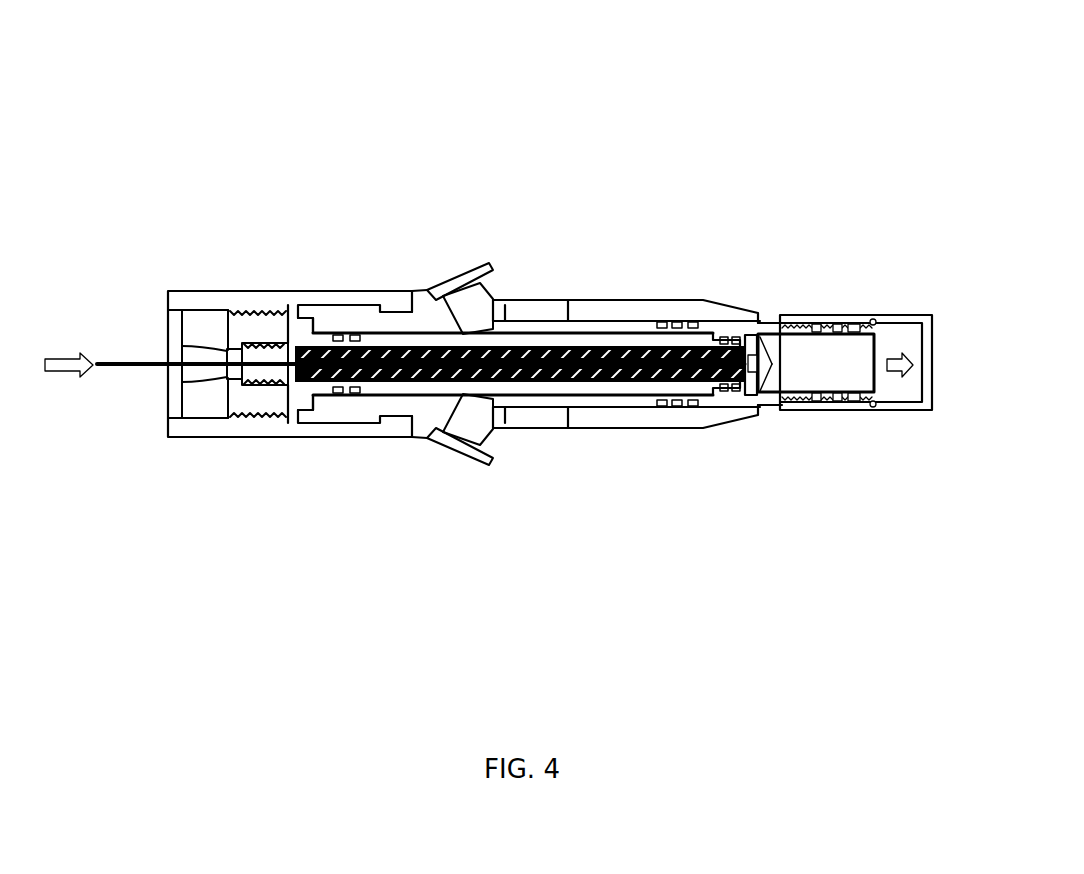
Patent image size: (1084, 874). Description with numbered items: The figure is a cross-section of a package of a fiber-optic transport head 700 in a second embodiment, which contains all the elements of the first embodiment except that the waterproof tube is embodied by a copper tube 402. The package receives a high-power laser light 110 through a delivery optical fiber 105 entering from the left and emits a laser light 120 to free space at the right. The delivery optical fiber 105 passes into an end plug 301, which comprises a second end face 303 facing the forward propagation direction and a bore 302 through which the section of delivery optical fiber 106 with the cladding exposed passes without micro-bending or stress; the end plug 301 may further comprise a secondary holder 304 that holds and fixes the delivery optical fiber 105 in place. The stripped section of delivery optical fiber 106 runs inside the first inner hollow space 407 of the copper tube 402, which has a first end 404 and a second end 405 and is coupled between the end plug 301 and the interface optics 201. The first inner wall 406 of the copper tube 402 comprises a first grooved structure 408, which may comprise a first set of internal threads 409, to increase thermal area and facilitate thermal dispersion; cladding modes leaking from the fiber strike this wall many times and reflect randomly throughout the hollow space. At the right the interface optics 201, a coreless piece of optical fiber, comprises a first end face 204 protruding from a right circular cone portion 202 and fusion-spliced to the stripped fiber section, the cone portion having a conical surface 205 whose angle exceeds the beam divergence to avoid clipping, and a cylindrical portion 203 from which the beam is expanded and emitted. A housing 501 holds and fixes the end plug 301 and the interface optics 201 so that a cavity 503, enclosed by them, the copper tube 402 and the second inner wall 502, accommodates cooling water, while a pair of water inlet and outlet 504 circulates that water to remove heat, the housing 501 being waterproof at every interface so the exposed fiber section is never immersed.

The package of the fiber-optic transport head 700 is at (560, 268).
The high-power laser light 110 is at (67, 355).
The delivery optical fiber 105 is at (150, 362).
The secondary holder 304 is at (210, 355).
The second end face 303 is at (298, 393).
The end plug 301 is at (264, 343).
The bore 302 is at (276, 357).
The first end 404 is at (313, 332).
The housing 501 is at (407, 283).
The pair of water inlet and outlet 504 is at (468, 288).
The second inner wall 502 is at (531, 323).
The cavity 503 is at (523, 397).
The copper tube 402 is at (596, 333).
The section of delivery optical fiber with the cladding exposed 106 is at (648, 346).
The first inner wall 406 is at (551, 388).
The first inner hollow space 407 is at (598, 383).
The first grooved structure 408 is at (632, 383).
The first set of internal threads 409 is at (700, 330).
The second end 405 is at (739, 390).
The first end face 204 is at (748, 390).
The interface optics 201 is at (825, 342).
The right circular cone portion 202 is at (762, 336).
The conical surface 205 is at (762, 341).
The cylindrical portion 203 is at (800, 333).
The laser light 120 is at (903, 378).